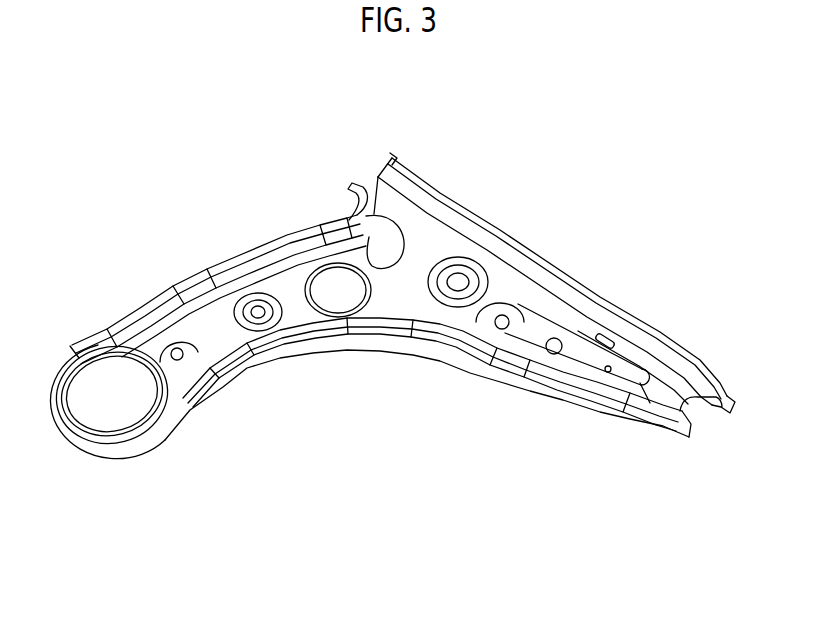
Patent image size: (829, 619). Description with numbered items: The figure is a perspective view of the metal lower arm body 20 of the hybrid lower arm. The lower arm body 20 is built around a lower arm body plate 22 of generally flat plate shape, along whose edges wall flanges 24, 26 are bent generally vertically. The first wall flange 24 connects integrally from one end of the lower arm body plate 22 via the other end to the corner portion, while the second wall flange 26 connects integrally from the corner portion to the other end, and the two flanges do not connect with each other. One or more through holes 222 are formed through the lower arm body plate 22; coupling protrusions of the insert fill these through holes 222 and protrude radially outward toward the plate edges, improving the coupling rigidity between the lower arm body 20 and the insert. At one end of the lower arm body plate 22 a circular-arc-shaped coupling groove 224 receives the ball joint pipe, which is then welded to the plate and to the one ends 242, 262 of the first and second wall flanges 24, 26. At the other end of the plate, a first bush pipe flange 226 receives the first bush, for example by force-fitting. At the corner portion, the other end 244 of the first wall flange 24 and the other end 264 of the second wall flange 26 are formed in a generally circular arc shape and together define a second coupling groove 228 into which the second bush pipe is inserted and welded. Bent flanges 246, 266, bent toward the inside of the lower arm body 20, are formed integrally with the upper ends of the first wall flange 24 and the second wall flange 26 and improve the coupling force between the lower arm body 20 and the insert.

The lower arm body 20 is at (522, 189).
The lower arm body plate 22 is at (422, 243).
The first wall flange 24 is at (393, 343).
The second wall flange 26 is at (452, 225).
The through holes 222 is at (255, 303).
The coupling groove 224 is at (699, 415).
The first bush pipe flange 226 is at (65, 366).
The second coupling groove 228 is at (377, 186).
The one end of the first wall flange 242 is at (670, 435).
The other end of the first wall flange 244 is at (354, 186).
The bent flange 246 is at (183, 278).
The one end of the second wall flange 262 is at (716, 372).
The other end of the second wall flange 264 is at (389, 154).
The bent flange 266 is at (635, 322).